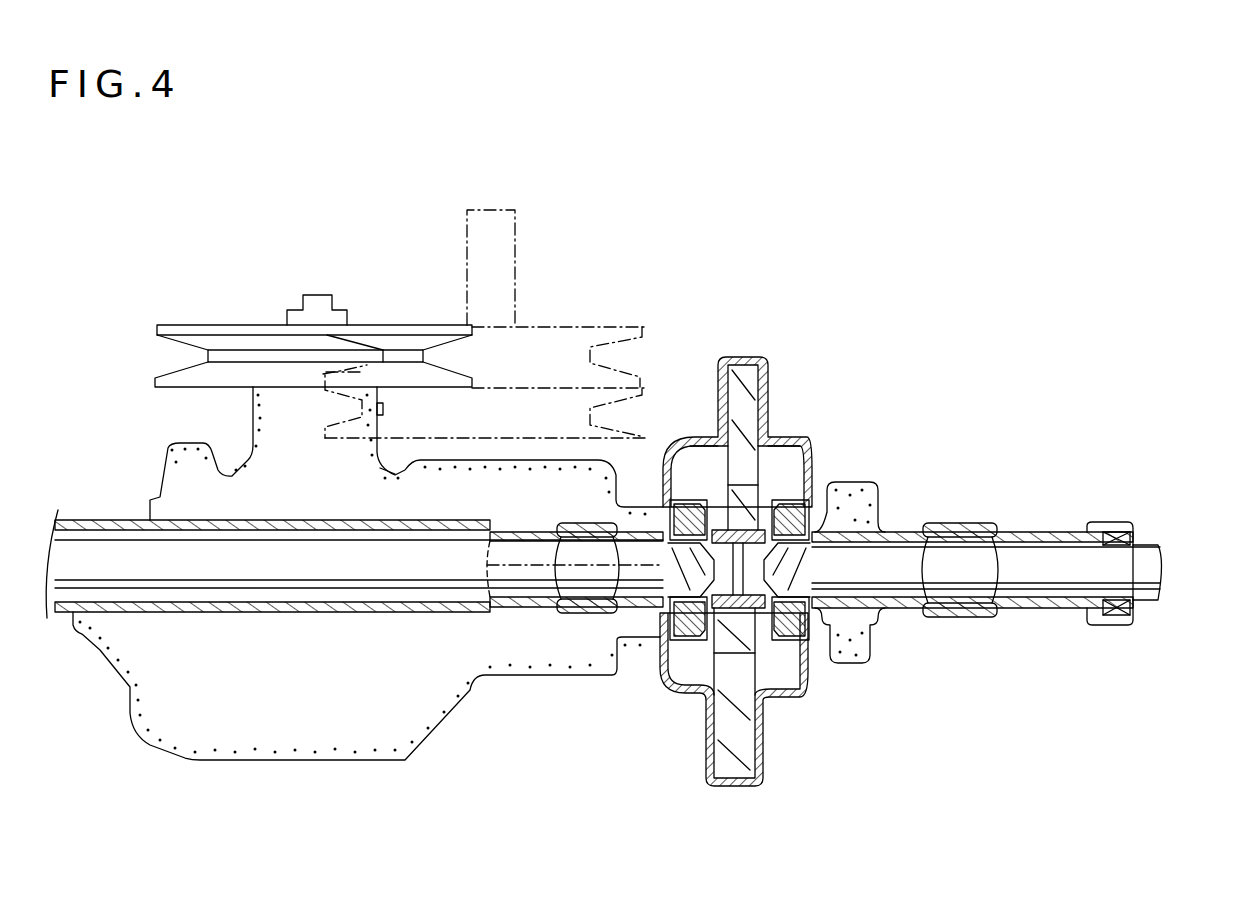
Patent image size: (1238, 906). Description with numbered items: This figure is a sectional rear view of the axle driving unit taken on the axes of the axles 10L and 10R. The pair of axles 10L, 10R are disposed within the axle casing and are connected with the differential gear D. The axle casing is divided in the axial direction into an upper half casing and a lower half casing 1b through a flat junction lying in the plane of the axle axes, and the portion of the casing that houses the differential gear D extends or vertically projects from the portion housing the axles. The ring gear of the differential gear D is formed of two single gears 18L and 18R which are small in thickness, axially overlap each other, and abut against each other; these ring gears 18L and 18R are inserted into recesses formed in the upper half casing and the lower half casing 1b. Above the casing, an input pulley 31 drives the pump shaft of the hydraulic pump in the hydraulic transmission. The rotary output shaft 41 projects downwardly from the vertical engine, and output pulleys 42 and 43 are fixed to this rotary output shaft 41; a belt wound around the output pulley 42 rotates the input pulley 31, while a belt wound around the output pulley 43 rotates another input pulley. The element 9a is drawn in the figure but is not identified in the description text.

The input pulley 31 is at (407, 332).
The rotary output shaft 41 is at (513, 285).
The output pulley 42 is at (610, 320).
The output pulley 43 is at (437, 438).
The transmission belt 9a is at (640, 390).
The ring gear 18R is at (717, 437).
The ring gear 18L is at (763, 467).
The axle 10L is at (380, 565).
The axle 10R is at (1044, 570).
The lower half casing 1b is at (577, 670).
The differential gear D is at (705, 647).